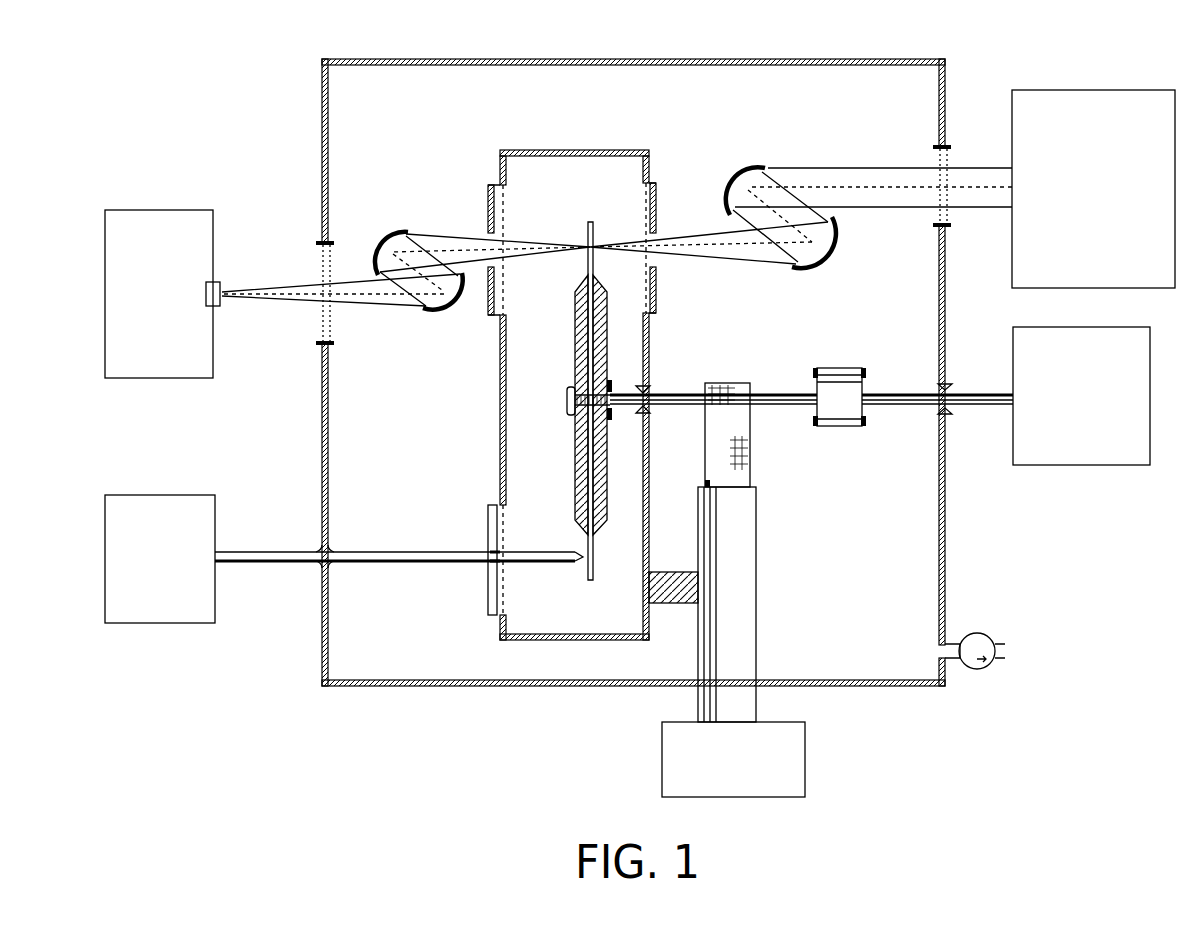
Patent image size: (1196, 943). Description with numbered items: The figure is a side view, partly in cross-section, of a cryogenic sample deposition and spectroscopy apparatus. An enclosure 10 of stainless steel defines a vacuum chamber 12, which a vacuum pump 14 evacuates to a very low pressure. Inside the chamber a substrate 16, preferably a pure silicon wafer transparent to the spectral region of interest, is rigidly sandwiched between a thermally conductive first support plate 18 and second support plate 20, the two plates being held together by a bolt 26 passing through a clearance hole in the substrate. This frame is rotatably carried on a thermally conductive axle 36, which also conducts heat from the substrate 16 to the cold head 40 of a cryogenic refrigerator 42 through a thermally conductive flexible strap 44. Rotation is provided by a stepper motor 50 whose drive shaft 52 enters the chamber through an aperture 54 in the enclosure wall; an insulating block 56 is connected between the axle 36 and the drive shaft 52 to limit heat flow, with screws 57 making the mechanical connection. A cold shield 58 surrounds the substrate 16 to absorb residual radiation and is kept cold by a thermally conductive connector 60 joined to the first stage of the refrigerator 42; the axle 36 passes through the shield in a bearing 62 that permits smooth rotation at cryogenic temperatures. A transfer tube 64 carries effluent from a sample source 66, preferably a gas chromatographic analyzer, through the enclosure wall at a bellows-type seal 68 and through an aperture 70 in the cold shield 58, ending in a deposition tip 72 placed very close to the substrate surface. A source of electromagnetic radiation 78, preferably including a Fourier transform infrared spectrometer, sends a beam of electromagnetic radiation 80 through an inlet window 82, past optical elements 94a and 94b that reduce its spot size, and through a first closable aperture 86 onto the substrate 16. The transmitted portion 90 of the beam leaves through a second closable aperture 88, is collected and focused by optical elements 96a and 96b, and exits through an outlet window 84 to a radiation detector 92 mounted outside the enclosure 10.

The enclosure 10 is at (386, 687).
The vacuum chamber 12 is at (440, 684).
The vacuum pump 14 is at (978, 673).
The substrate 16 is at (594, 576).
The first support plate 18 is at (607, 490).
The second support plate 20 is at (576, 467).
The bolt 26 is at (567, 392).
The axle 36 is at (663, 390).
The cold head 40 is at (752, 503).
The cryogenic refrigerator 42 is at (806, 775).
The thermally conductive flexible strap 44 is at (753, 435).
The stepper motor 50 is at (1048, 465).
The drive shaft 52 is at (957, 407).
The aperture 54 is at (948, 392).
The insulating block 56 is at (833, 420).
The screws 57 is at (815, 370).
The cold shield 58 is at (555, 150).
The thermally conductive connector 60 is at (660, 605).
The bearing 62 is at (650, 408).
The transfer tube 64 is at (372, 550).
The sample source 66 is at (160, 623).
The bellows-type seal 68 is at (323, 565).
The aperture 70 is at (487, 565).
The deposition tip 72 is at (582, 563).
The source of electromagnetic radiation 78 is at (1050, 90).
The beam of electromagnetic radiation 80 is at (962, 207).
The inlet window 82 is at (947, 158).
The outlet window 84 is at (321, 333).
The first closable aperture 86 is at (656, 240).
The second closable aperture 88 is at (487, 235).
The transmitted portion of the beam 90 is at (452, 243).
The radiation detector 92 is at (205, 293).
The optical element 94a is at (765, 166).
The optical element 94b is at (798, 268).
The optical element 96a is at (410, 232).
The optical element 96b is at (423, 310).